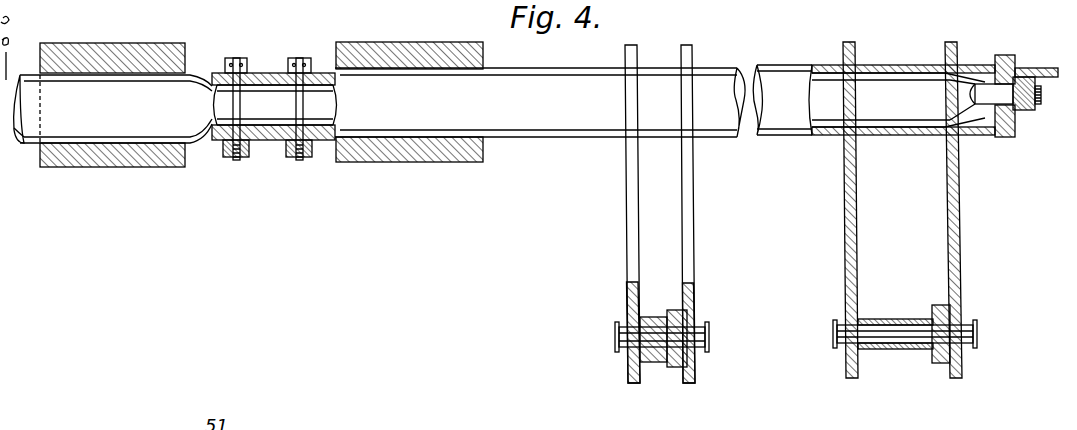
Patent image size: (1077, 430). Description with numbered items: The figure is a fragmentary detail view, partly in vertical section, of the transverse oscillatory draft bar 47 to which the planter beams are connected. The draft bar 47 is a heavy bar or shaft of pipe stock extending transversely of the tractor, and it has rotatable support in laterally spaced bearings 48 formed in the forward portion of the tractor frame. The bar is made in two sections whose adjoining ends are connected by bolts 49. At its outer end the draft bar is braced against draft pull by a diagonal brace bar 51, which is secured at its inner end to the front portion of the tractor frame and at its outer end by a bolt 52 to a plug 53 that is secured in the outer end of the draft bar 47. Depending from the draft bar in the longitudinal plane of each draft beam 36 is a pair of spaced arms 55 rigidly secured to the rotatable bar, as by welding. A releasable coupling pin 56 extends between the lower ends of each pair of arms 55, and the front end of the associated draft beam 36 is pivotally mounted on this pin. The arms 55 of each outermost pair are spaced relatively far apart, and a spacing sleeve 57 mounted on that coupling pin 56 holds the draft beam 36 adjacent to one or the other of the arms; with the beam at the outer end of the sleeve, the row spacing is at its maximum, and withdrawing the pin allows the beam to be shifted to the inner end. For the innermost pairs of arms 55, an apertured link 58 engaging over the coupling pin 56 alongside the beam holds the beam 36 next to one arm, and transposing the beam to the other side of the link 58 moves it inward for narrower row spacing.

The bearings 48 is at (100, 77).
The bolts 49 is at (297, 105).
The draft bar 47 is at (764, 135).
The plugs 53 is at (1010, 135).
The diagonal brace bars 51 is at (1022, 68).
The bolts 52 is at (1036, 108).
The arms 55 is at (683, 220).
The draft beam 36 is at (672, 312).
The apertured link 58 is at (658, 362).
The coupling pin 56 is at (619, 335).
The spacing sleeve 57 is at (896, 319).